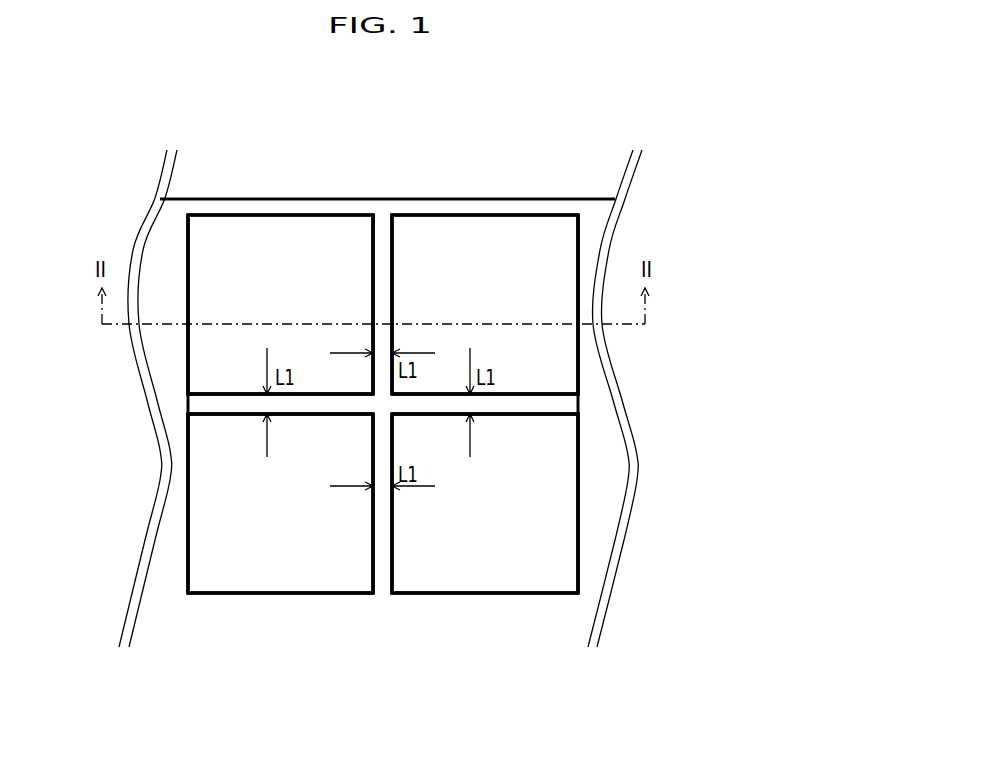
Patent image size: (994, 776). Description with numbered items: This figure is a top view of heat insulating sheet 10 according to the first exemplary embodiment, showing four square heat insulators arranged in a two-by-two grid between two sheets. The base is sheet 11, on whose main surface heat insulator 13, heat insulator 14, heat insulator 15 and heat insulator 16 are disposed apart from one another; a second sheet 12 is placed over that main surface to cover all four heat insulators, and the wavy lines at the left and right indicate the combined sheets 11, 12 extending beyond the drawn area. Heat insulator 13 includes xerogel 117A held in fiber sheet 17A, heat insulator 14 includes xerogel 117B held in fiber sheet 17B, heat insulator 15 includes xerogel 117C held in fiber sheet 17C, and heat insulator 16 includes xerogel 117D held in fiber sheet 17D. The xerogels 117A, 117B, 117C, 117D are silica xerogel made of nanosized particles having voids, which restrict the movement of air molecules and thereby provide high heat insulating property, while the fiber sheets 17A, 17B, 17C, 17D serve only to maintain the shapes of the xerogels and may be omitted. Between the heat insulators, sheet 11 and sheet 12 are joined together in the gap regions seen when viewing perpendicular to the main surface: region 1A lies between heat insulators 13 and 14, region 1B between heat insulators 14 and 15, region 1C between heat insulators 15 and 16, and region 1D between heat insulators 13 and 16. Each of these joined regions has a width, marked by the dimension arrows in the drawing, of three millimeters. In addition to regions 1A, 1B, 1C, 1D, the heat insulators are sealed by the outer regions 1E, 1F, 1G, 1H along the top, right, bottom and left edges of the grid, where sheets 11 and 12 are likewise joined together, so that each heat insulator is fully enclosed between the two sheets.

The heat insulating sheet 10 is at (602, 144).
The sheet 11 is at (380, 428).
The sheet 12 is at (583, 600).
The heat insulator 13 is at (229, 237).
The heat insulator 14 is at (424, 240).
The heat insulator 15 is at (436, 557).
The heat insulator 16 is at (228, 557).
The fiber sheet 17A is at (285, 243).
The fiber sheet 17B is at (478, 245).
The fiber sheet 17C is at (477, 555).
The fiber sheet 17D is at (270, 555).
The xerogel 117A is at (327, 245).
The xerogel 117B is at (522, 248).
The xerogel 117C is at (535, 572).
The xerogel 117D is at (329, 572).
The region 1A is at (384, 255).
The region 1B is at (540, 401).
The region 1C is at (383, 540).
The region 1D is at (240, 406).
The region 1E is at (262, 207).
The region 1F is at (592, 437).
The region 1G is at (411, 608).
The region 1H is at (178, 430).